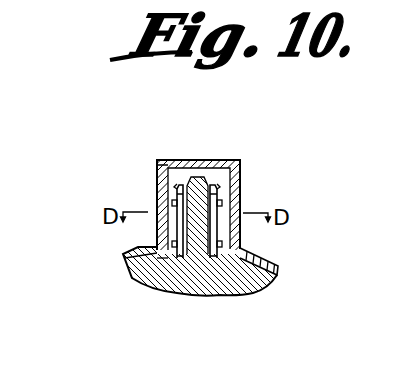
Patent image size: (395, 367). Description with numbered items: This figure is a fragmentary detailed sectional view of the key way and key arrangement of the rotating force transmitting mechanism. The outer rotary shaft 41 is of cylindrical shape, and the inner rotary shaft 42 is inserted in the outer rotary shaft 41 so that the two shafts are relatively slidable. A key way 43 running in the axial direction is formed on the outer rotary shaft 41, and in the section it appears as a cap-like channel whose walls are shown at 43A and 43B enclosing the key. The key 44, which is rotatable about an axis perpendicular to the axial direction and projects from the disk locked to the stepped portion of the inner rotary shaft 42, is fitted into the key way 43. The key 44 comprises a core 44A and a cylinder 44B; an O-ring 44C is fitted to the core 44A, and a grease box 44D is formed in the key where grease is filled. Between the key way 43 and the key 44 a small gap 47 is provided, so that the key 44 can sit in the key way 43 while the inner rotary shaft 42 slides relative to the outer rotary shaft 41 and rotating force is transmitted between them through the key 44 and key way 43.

The outer rotary shaft 41 is at (123, 257).
The inner rotary shaft 42 is at (220, 295).
The key way 43 is at (240, 174).
The cap top wall 43A is at (158, 170).
The cap side wall 43B is at (240, 189).
The key 44 is at (218, 196).
The core 44A is at (180, 183).
The cylinder 44B is at (219, 204).
The O-ring 44C is at (178, 193).
The grease box 44D is at (171, 201).
The small gap 47 is at (157, 233).